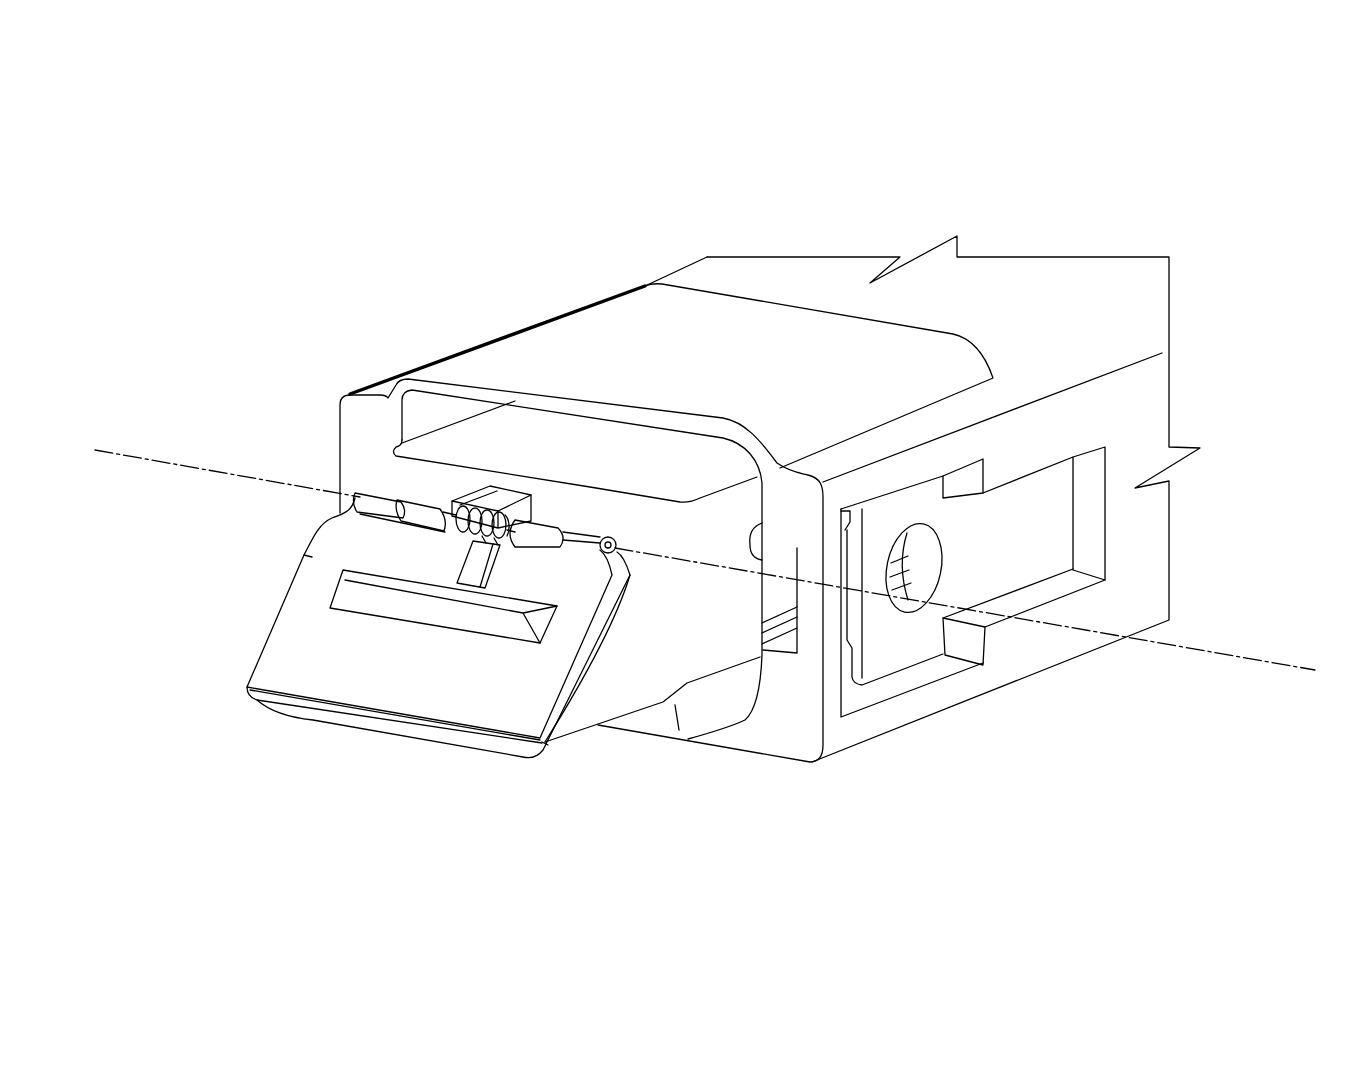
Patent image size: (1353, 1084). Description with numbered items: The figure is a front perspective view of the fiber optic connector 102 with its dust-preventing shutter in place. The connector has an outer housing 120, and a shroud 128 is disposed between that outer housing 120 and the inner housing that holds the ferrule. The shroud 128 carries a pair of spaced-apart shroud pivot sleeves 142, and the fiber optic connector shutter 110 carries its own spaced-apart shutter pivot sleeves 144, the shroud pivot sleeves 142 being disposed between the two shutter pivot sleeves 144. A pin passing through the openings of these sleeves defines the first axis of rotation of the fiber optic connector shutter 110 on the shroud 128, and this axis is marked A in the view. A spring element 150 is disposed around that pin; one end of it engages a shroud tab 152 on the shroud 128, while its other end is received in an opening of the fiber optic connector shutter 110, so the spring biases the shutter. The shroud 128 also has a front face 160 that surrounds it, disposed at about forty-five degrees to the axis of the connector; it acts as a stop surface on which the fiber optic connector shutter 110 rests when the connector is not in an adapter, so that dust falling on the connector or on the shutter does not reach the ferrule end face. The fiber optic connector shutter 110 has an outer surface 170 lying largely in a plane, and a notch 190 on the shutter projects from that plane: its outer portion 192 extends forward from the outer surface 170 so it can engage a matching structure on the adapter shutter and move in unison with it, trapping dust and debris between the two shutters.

The fiber optic connector 102 is at (815, 173).
The fiber optic connector shutter 110 is at (472, 712).
The outer housing 120 is at (1078, 282).
The shroud 128 is at (580, 727).
The shroud pivot sleeves 142 is at (420, 512).
The shutter pivot sleeves 144 is at (367, 503).
The spring element 150 is at (508, 490).
The shroud tab 152 is at (473, 485).
The front face 160 is at (387, 723).
The outer surface 170 is at (322, 676).
The notch 190 is at (352, 624).
The outer portion 192 is at (358, 597).